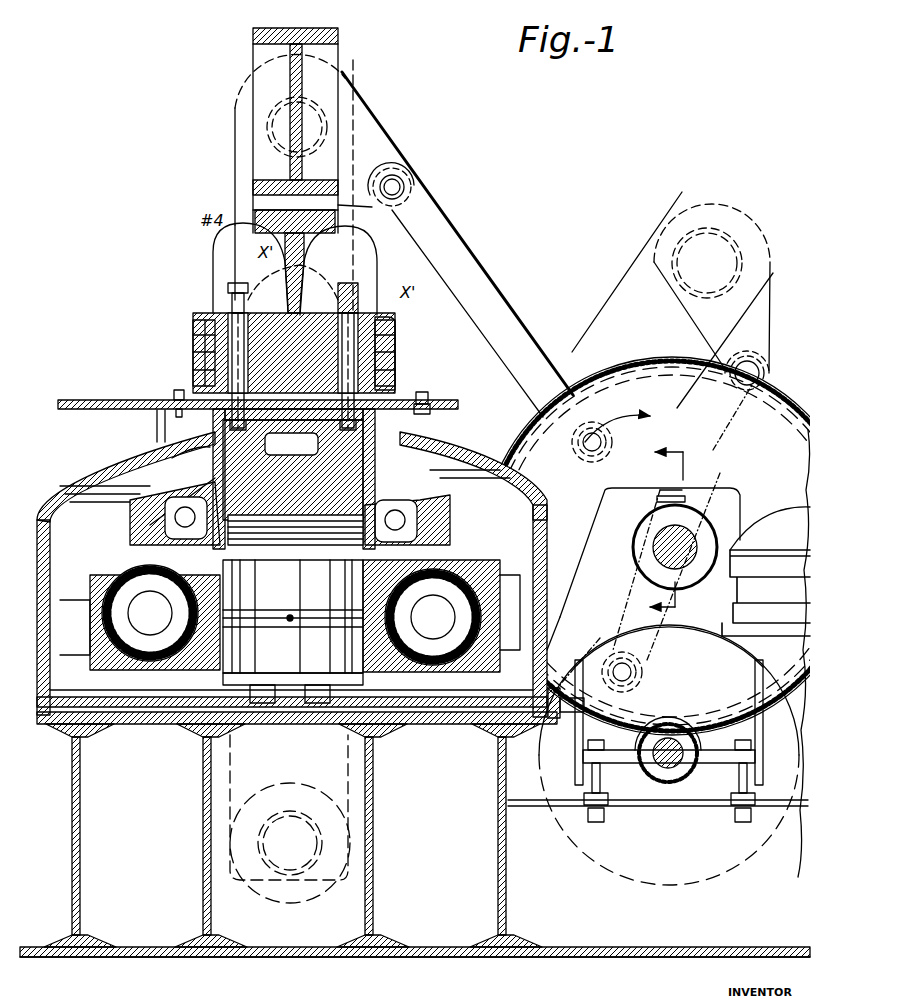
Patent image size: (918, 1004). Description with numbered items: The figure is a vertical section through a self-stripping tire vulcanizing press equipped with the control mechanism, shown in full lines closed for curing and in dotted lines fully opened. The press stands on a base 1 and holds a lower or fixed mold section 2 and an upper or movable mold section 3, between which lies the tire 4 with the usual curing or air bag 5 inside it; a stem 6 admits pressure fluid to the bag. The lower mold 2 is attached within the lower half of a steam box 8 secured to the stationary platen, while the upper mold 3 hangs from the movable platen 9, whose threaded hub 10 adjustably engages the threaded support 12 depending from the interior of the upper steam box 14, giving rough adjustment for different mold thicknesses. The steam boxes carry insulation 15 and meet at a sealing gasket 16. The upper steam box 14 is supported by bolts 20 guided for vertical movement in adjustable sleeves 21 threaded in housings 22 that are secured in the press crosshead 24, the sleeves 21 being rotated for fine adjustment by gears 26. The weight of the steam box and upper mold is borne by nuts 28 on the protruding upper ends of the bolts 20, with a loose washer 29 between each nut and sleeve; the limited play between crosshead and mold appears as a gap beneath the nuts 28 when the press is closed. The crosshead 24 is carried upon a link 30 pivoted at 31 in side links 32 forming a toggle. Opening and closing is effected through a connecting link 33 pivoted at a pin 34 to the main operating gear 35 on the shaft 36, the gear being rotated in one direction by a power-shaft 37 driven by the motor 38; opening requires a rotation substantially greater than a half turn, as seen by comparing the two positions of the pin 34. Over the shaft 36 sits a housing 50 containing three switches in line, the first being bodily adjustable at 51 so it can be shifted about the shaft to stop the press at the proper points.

The base 1 is at (75, 745).
The lower mold section 2 is at (485, 668).
The upper mold section 3 is at (150, 618).
The tire 4 is at (210, 265).
The curing bag 5 is at (75, 648).
The stem 6 is at (292, 616).
The steam box 8 is at (550, 635).
The movable platen 9 is at (415, 515).
The threaded hub 10 is at (330, 562).
The threaded support 12 is at (225, 470).
The upper steam box 14 is at (460, 455).
The insulation 15 is at (540, 505).
The sealing gasket 16 is at (548, 603).
The bolts 20 is at (210, 372).
The adjustable sleeves 21 is at (205, 335).
The housings 22 is at (200, 355).
The crosshead 24 is at (393, 335).
The gears 26 is at (200, 405).
The nuts 28 is at (240, 285).
The loose washer 29 is at (260, 300).
The link 30 is at (322, 78).
The pivot 31 is at (262, 128).
The side links 32 is at (240, 188).
The connecting link 33 is at (520, 318).
The pin 34 is at (600, 430).
The main operating gear 35 is at (790, 400).
The shaft 36 is at (692, 540).
The power-shaft 37 is at (668, 770).
The motor 38 is at (772, 520).
The housing 50 is at (715, 500).
The switch adjustment 51 is at (655, 500).